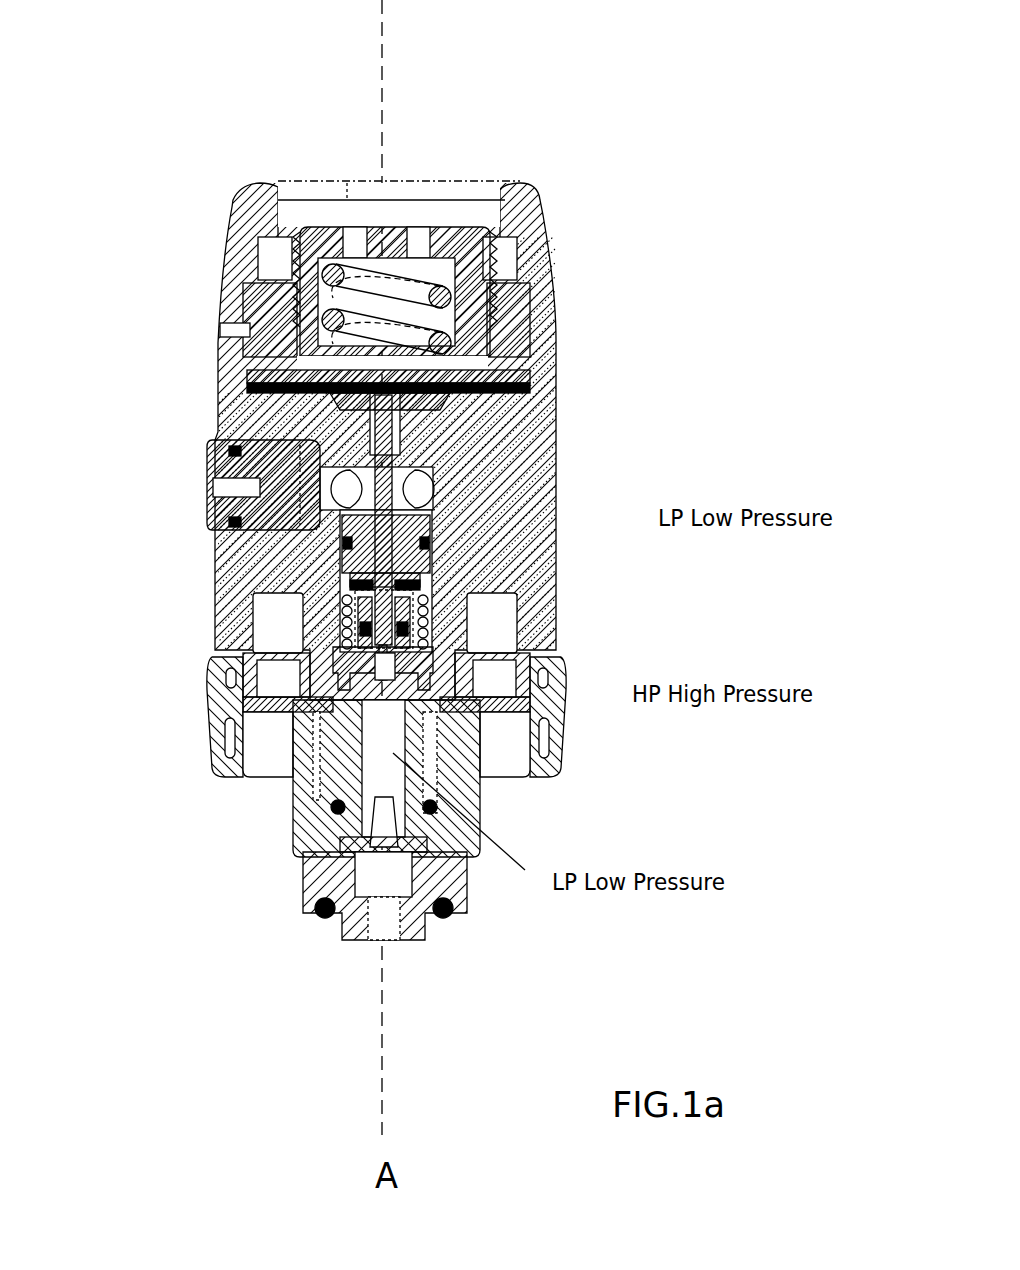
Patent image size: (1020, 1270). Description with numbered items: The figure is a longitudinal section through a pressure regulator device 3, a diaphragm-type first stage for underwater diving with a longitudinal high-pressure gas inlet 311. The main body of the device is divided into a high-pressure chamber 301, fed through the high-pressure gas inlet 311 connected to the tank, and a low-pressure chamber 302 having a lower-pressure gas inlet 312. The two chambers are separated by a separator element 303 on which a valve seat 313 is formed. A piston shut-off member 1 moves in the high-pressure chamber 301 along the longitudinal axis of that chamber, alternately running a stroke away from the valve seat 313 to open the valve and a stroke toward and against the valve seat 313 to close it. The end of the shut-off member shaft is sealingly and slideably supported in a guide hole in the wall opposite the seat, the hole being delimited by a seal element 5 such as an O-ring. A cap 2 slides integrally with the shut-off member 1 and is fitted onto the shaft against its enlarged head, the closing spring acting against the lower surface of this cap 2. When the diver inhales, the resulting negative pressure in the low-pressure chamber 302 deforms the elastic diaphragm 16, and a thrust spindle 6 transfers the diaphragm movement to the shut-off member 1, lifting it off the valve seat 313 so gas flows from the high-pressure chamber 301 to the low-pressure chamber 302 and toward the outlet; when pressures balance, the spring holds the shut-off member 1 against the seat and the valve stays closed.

The piston shut-off member 1 is at (385, 665).
The cap 2 is at (370, 578).
The pressure regulator device 3 is at (232, 232).
The seal element 5 is at (460, 640).
The thrust spindle 6 is at (253, 378).
The elastic diaphragm 16 is at (527, 388).
The high-pressure chamber 301 is at (435, 578).
The low-pressure chamber 302 is at (425, 490).
The separator element 303 is at (432, 540).
The high-pressure gas inlet 311 is at (395, 660).
The lower-pressure gas inlet 312 is at (300, 437).
The valve seat 313 is at (360, 565).